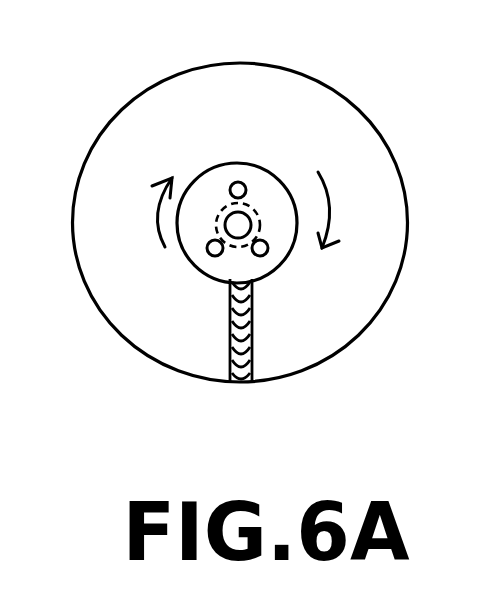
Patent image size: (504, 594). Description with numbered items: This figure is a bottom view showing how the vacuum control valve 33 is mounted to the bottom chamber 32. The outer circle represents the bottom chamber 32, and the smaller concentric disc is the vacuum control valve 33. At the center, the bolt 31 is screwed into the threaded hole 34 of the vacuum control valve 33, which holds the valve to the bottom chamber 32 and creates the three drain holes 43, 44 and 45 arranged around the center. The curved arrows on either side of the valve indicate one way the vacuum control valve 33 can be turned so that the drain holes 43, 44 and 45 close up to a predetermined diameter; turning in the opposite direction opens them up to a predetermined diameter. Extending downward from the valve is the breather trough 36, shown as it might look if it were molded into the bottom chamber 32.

The bolt 31 is at (250, 229).
The bottom chamber 32 is at (136, 99).
The vacuum control valve 33 is at (240, 222).
The threaded hole 34 is at (223, 239).
The breather trough 36 is at (238, 384).
The drain hole 43 is at (237, 182).
The drain hole 44 is at (209, 254).
The drain hole 45 is at (266, 254).